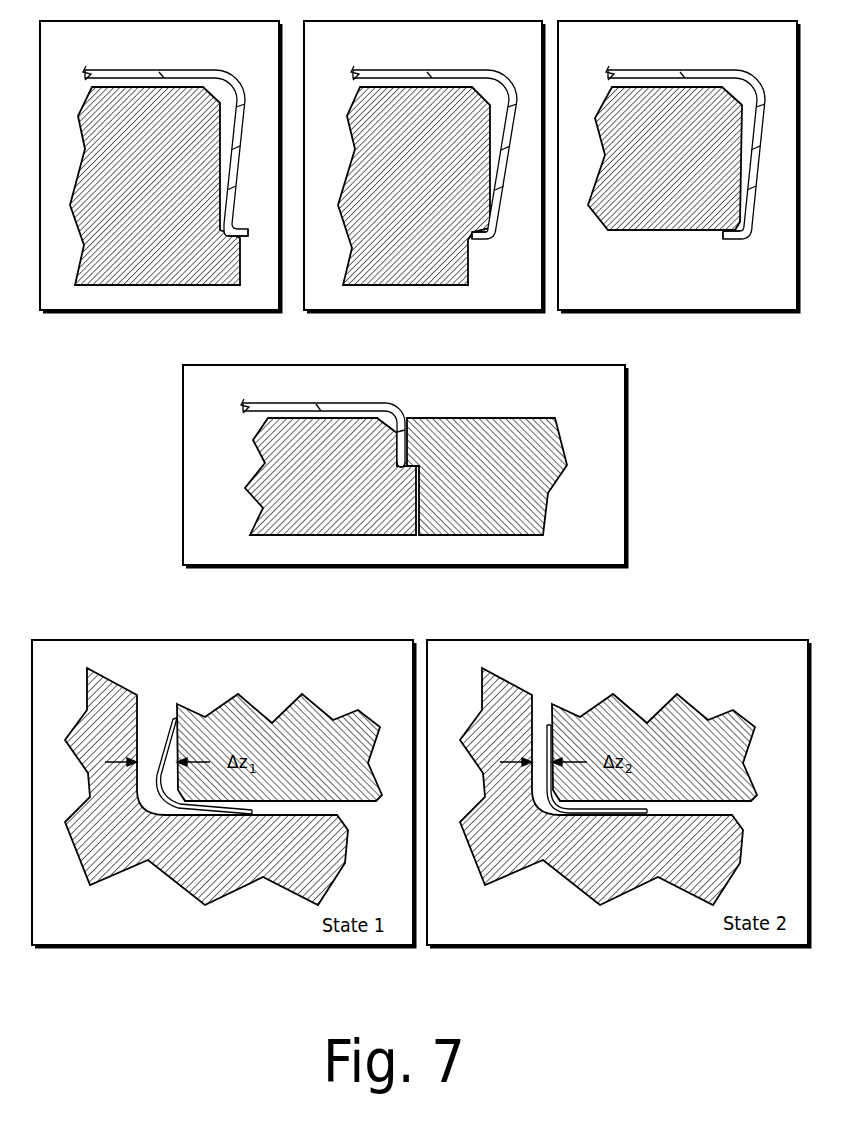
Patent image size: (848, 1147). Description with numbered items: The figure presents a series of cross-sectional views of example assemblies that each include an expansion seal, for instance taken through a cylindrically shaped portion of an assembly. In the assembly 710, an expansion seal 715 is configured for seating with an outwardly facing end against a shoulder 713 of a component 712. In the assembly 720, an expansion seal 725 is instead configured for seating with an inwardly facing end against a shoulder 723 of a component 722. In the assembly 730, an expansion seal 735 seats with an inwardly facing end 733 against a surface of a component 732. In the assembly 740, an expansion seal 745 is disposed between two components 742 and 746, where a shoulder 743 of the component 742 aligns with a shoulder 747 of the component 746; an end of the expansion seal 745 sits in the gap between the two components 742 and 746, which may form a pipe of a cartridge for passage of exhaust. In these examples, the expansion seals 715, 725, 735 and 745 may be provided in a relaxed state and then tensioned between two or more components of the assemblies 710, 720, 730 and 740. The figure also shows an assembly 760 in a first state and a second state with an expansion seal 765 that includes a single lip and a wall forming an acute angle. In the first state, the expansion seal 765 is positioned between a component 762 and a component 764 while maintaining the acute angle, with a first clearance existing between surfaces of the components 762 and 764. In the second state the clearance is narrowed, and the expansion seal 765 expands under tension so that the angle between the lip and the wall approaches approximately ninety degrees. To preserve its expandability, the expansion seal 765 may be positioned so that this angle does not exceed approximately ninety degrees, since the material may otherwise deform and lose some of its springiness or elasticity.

The assembly 710 is at (121, 54).
The component 712 is at (155, 186).
The shoulder 713 is at (221, 235).
The expansion seal 715 is at (191, 70).
The assembly 720 is at (362, 54).
The component 722 is at (439, 180).
The shoulder 723 is at (465, 237).
The expansion seal 725 is at (445, 70).
The assembly 730 is at (614, 54).
The component 732 is at (694, 165).
The inwardly facing end 733 is at (722, 233).
The expansion seal 735 is at (700, 70).
The assembly 740 is at (594, 400).
The component 742 is at (355, 454).
The shoulder 743 is at (396, 468).
The expansion seal 745 is at (354, 403).
The component 746 is at (499, 452).
The shoulder 747 is at (419, 467).
The assembly 760 is at (377, 682).
The component 762 is at (199, 855).
The component 764 is at (330, 760).
The expansion seal 765 is at (163, 743).